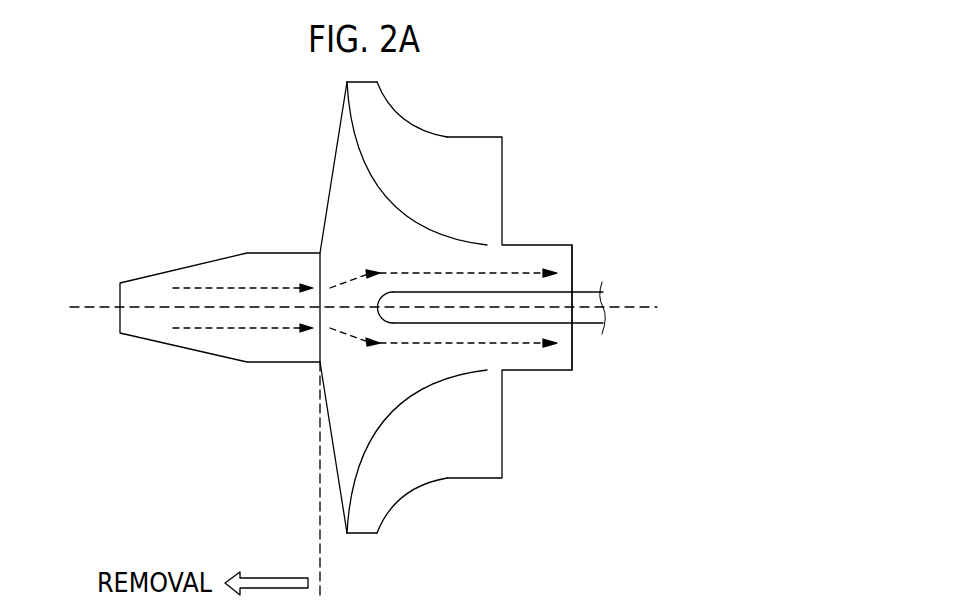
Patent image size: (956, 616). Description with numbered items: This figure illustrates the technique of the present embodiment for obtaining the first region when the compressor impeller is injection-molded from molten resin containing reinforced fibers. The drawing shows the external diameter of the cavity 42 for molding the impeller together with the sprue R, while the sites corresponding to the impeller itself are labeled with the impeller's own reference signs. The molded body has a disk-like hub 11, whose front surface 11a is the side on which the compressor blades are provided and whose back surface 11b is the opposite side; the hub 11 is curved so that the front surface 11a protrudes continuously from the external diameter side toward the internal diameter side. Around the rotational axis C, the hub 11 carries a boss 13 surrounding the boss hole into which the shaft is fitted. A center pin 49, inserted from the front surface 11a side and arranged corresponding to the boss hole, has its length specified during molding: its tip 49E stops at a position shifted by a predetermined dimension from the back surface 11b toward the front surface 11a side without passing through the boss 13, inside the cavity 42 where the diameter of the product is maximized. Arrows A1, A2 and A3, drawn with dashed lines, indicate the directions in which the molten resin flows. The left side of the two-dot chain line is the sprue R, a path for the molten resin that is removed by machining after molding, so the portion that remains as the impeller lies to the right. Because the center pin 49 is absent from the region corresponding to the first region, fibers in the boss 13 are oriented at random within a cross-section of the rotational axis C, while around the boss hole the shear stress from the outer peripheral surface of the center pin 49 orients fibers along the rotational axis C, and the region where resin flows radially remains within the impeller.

The hub 11 is at (558, 245).
The front surface 11a is at (367, 157).
The back surface 11b is at (335, 160).
The boss 13 is at (573, 272).
The cavity 42 is at (395, 249).
The center pin 49 is at (585, 325).
The tip 49E is at (382, 312).
The sprue R is at (197, 263).
The rotational axis C is at (628, 303).
The arrow A1 is at (225, 330).
The arrow A2 is at (347, 332).
The arrow A3 is at (517, 345).